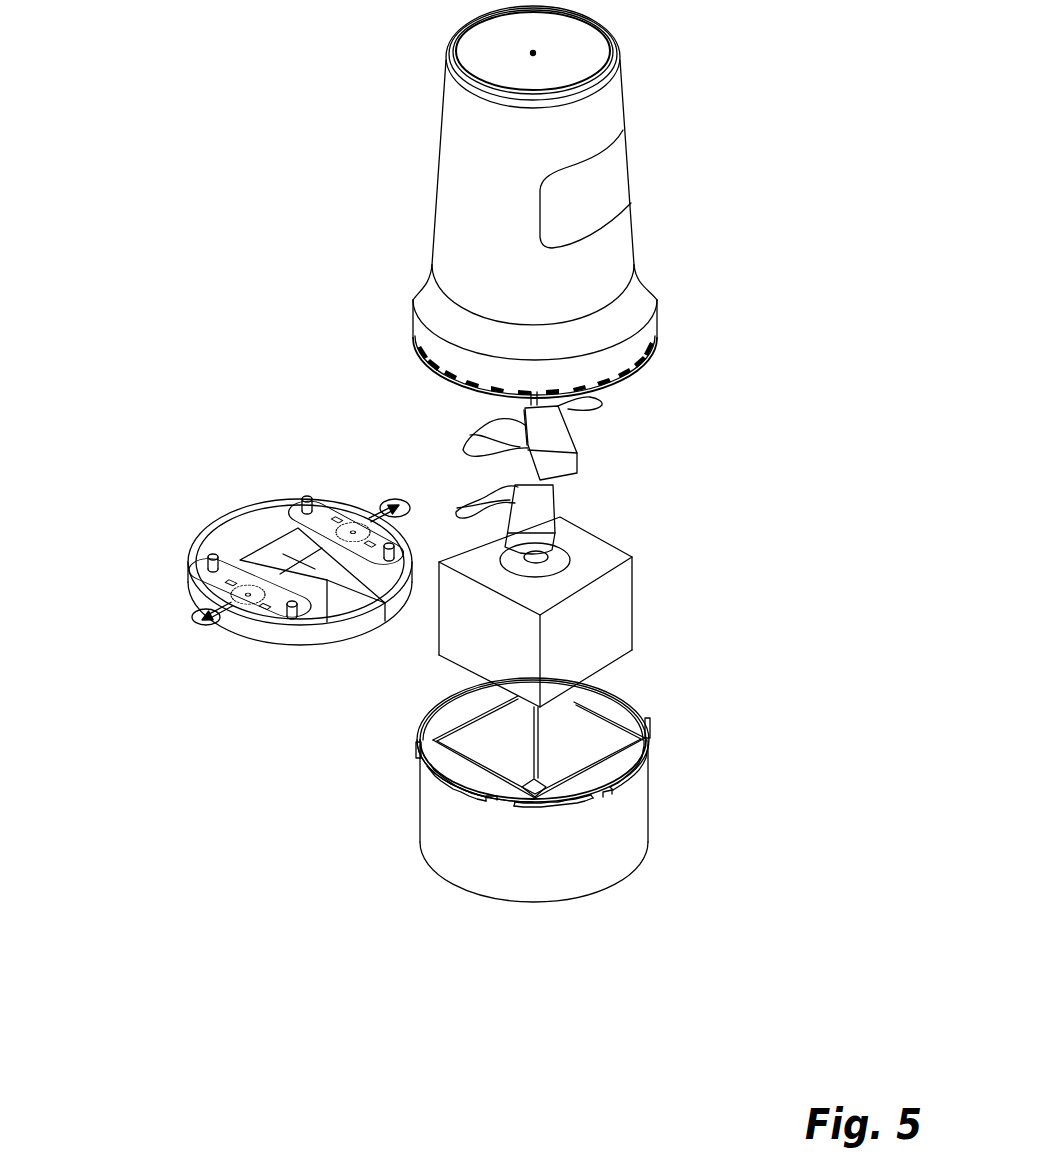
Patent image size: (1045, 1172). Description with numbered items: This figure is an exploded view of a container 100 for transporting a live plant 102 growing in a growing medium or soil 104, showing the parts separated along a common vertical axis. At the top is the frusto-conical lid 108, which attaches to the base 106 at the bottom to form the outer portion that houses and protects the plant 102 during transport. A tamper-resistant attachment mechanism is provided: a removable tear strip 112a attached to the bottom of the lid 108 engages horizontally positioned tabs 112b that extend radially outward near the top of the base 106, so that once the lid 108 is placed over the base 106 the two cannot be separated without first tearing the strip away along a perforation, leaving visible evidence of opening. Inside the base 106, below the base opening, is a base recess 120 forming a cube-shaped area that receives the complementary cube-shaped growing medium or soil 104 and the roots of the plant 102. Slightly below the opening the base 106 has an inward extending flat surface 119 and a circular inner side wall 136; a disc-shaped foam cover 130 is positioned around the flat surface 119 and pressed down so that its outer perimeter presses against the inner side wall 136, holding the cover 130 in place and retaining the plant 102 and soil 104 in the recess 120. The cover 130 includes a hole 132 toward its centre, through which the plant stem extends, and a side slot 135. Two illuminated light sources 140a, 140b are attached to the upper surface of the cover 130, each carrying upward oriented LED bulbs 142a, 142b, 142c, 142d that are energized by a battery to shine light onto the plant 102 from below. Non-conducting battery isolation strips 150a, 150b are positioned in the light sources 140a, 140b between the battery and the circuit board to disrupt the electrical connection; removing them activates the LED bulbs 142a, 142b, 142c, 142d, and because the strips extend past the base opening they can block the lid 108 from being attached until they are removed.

The container 100 is at (712, 122).
The live plant 102 is at (570, 462).
The growing medium or soil 104 is at (615, 602).
The base 106 is at (420, 810).
The lid 108 is at (443, 100).
The tear strip 112a is at (412, 340).
The tabs 112b is at (652, 795).
The flat surface 119 is at (610, 712).
The base recess 120 is at (600, 742).
The cover 130 is at (203, 528).
The hole 132 is at (300, 560).
The side slot 135 is at (323, 597).
The inner side wall 136 is at (420, 723).
The light source 140a is at (248, 597).
The light source 140b is at (353, 530).
The LED bulb 142a is at (207, 563).
The LED bulb 142b is at (290, 612).
The LED bulb 142c is at (305, 500).
The LED bulb 142d is at (393, 562).
The battery isolation strip 150a is at (188, 620).
The battery isolation strip 150b is at (393, 503).